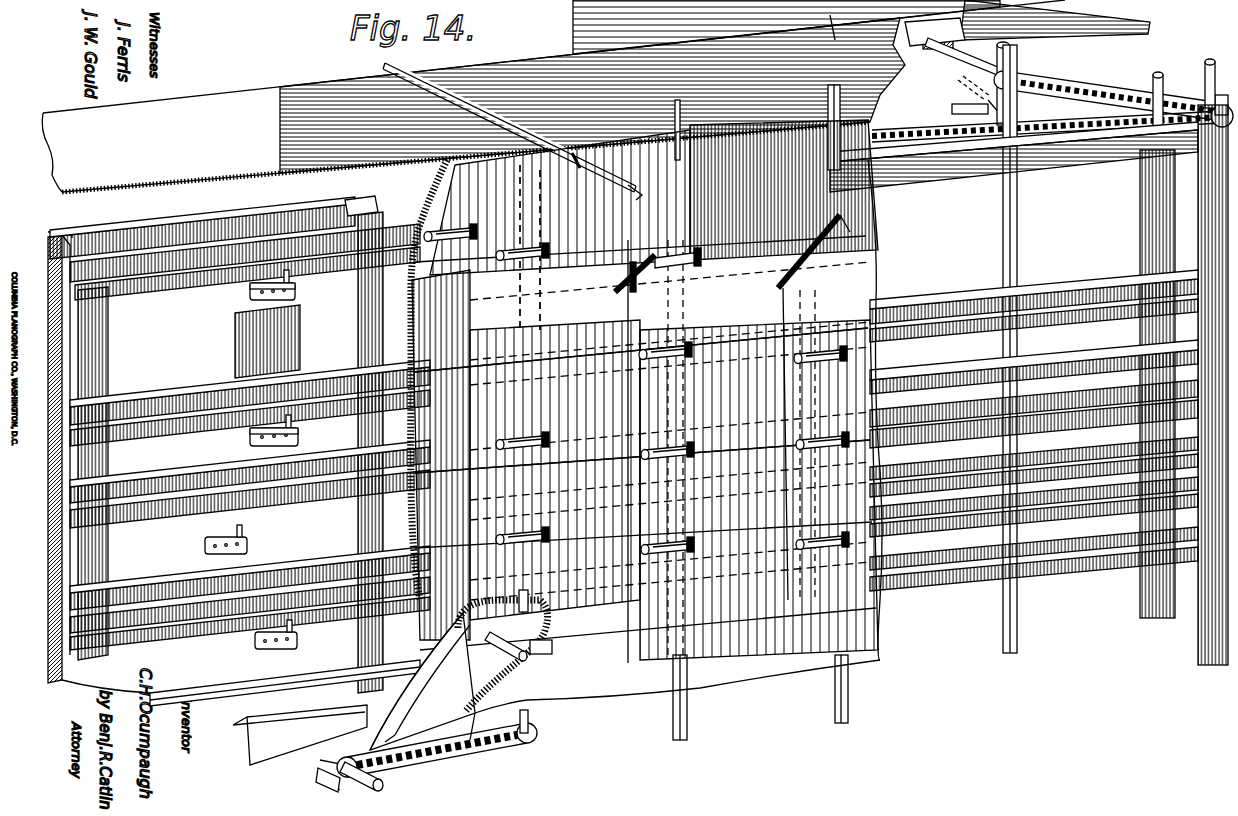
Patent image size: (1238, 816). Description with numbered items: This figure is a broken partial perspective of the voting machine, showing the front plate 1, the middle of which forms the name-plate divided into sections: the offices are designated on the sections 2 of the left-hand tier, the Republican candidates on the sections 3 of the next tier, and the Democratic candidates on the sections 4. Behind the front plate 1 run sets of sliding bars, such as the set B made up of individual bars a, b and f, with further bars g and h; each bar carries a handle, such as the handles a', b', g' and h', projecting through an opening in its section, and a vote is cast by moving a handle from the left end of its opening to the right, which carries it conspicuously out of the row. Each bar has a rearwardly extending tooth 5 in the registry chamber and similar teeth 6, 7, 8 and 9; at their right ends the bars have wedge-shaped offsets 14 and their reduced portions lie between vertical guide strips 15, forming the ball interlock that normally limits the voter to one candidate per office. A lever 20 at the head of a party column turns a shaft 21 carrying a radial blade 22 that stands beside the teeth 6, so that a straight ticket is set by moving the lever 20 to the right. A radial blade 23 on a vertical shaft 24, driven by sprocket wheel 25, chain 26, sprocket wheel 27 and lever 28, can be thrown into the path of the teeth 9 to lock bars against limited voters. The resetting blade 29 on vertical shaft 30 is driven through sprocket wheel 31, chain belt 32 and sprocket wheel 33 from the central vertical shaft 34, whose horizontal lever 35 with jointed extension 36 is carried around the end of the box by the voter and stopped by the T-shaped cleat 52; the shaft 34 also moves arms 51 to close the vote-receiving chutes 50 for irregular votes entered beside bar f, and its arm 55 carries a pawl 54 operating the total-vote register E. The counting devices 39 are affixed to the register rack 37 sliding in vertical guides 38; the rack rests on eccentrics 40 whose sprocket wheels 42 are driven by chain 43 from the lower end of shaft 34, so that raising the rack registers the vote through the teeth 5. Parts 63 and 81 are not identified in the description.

The front plate 1 is at (646, 416).
The sections of the left hand tier 2 is at (641, 379).
The sections 3 is at (642, 427).
The sections 4 is at (840, 404).
The rearwardly extending tooth 5 is at (325, 395).
The teeth 6 is at (712, 310).
The teeth 7 is at (848, 318).
The teeth 8 is at (772, 571).
The teeth 9 is at (1132, 270).
The offsets 14 is at (1160, 172).
The vertical guide strips 15 is at (1165, 190).
The lever 20 is at (780, 280).
The shaft 21 is at (645, 284).
The radial blade 22 is at (690, 263).
The radial blade 23 is at (1138, 240).
The vertical shaft 24 is at (1152, 80).
The sprocket wheel 25 is at (1047, 132).
The chain 26 is at (1112, 88).
The sprocket wheel 27 is at (1018, 83).
The lever 28 is at (964, 89).
The resetting blade 29 is at (1197, 640).
The vertical shaft 30 is at (1208, 62).
The sprocket wheel 31 is at (1212, 108).
The chain belt 32 is at (952, 112).
The sprocket wheel 33 is at (922, 36).
The vertical shaft 34 is at (1030, 20).
The horizontal lever 35 is at (555, 130).
The jointed extension 36 is at (615, 201).
The plate or rack 37 is at (262, 720).
The vertical guides 38 is at (392, 700).
The counting devices 39 is at (306, 640).
The eccentrics 40 is at (395, 786).
The sprocket wheels 42 is at (559, 606).
The chain 43 is at (316, 780).
The chute 50 is at (410, 690).
The arms 51 is at (458, 624).
The T-shaped cleat 52 is at (553, 96).
The pawl 54 is at (821, 21).
The arm 55 is at (975, 62).
The cover 63 is at (286, 358).
The pin 81 is at (688, 123).
The register E is at (926, 23).
The set of bars B is at (1034, 463).
The bar a is at (250, 392).
The bar b is at (250, 402).
The bar f is at (305, 468).
The bar g is at (245, 268).
The bar h is at (214, 254).
The handle a' is at (665, 369).
The handle b' is at (801, 371).
The handle g' is at (450, 262).
The handle h' is at (522, 266).